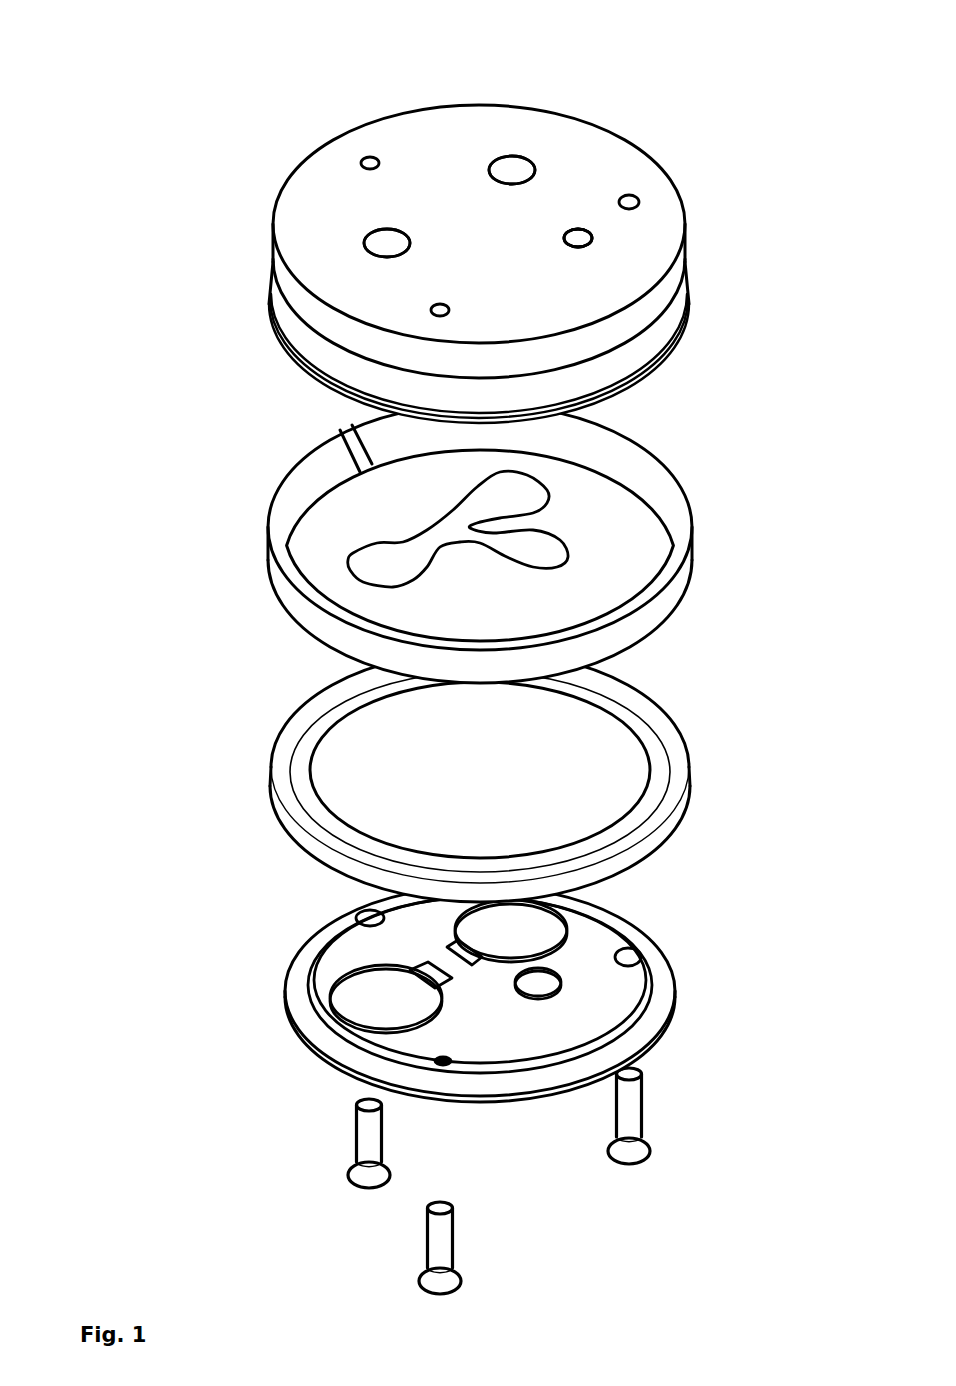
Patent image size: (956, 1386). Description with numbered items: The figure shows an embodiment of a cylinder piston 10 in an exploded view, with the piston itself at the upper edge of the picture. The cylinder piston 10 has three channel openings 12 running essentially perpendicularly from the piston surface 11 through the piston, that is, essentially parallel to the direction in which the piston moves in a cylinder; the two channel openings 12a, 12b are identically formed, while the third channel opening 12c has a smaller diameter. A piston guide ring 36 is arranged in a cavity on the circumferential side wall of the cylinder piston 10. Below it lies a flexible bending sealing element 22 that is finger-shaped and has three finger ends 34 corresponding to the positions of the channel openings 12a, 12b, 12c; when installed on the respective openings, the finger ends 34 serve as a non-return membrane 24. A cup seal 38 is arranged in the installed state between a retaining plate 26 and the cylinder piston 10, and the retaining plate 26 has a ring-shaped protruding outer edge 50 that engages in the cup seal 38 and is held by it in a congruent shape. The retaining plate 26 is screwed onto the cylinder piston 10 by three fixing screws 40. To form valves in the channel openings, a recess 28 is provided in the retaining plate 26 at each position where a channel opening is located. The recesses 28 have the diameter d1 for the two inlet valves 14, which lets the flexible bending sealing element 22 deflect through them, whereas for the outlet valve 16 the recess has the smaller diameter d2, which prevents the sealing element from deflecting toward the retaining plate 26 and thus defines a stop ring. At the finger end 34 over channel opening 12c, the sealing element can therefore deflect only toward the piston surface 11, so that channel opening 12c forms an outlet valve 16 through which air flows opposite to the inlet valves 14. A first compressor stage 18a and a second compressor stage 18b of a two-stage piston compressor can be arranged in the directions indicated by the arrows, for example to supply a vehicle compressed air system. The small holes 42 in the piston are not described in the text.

The cylinder piston 10 is at (166, 248).
The piston surface 11 is at (669, 377).
The channel openings 12 is at (491, 155).
The first channel opening 12a is at (367, 240).
The second channel opening 12b is at (513, 168).
The third channel opening 12c is at (586, 240).
The inlet valves 14 is at (426, 156).
The outlet valve 16 is at (659, 280).
The first compressor stage 18a is at (157, 24).
The second compressor stage 18b is at (183, 1236).
The flexible bending sealing element 22 is at (491, 534).
The non-return membrane 24 is at (491, 534).
The finger ends 34 is at (500, 493).
The retaining plate 26 is at (443, 976).
The recesses 28 is at (437, 942).
The piston guide ring 36 is at (427, 527).
The cup seal 38 is at (303, 748).
The fixing screws 40 is at (353, 1140).
The pin holes 42 is at (363, 163).
The ring-shaped protruding outer edge 50 is at (652, 985).
The diameter of inlet valve recesses d1 is at (422, 988).
The diameter of outlet valve recess d2 is at (521, 988).